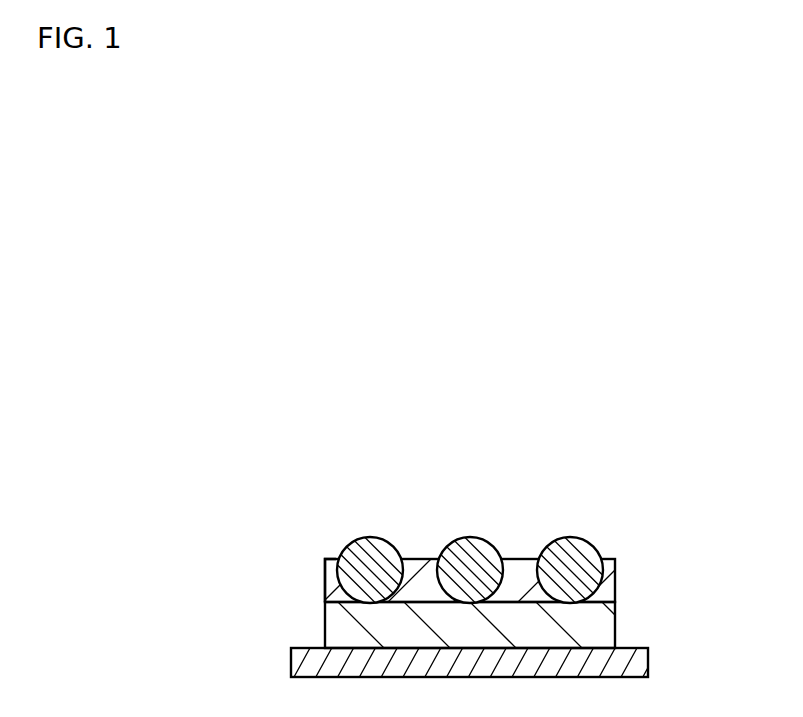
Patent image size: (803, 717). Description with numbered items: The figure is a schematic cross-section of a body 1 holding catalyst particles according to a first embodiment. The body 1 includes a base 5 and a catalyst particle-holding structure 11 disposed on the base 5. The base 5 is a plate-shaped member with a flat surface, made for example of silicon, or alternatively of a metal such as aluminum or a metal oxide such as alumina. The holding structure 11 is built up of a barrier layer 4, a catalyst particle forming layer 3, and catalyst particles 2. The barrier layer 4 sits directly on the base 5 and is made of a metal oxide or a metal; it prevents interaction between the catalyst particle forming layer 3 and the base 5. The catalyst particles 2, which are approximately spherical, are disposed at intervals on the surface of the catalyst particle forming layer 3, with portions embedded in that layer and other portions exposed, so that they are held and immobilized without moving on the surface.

The body holding catalyst particles 1 is at (580, 482).
The catalyst particles 2 is at (589, 541).
The catalyst particle forming layer 3 is at (616, 578).
The barrier layer 4 is at (615, 626).
The base 5 is at (648, 662).
The catalyst particle-holding structure 11 is at (321, 556).